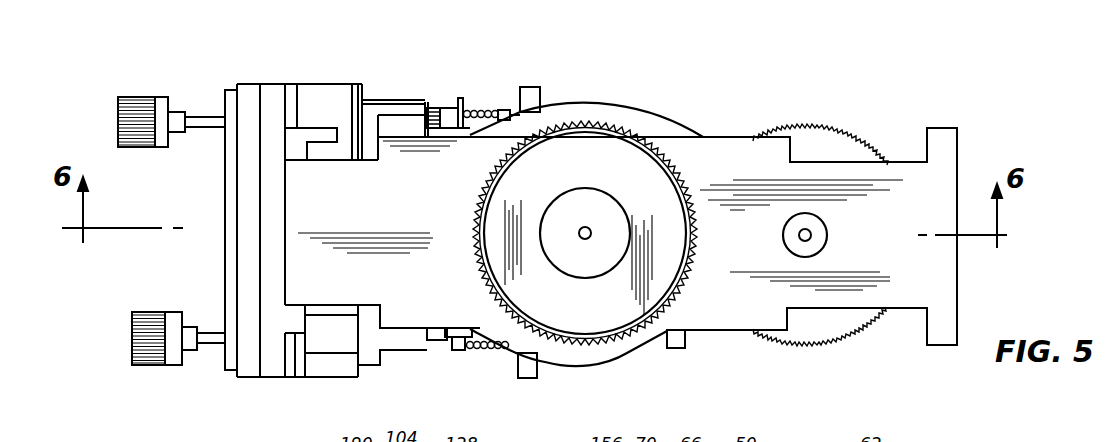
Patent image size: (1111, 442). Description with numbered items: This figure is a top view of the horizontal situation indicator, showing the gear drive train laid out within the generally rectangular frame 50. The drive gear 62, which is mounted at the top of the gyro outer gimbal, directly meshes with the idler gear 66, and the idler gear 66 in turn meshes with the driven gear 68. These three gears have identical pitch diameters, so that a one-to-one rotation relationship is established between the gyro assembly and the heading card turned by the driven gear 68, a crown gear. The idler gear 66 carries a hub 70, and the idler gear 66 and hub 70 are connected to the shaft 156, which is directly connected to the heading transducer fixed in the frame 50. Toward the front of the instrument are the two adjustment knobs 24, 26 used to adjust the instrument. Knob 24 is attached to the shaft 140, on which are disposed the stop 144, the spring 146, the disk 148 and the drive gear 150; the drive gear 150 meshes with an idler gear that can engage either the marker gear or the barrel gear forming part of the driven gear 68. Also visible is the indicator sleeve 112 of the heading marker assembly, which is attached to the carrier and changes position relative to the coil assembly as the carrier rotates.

The knob 24 is at (120, 122).
The knob 26 is at (134, 334).
The frame 50 is at (636, 348).
The drive gear 62 is at (835, 130).
The idler gear 66 is at (617, 157).
The driven gear 68 is at (472, 225).
The hub 70 is at (617, 216).
The indicator sleeve 112 is at (486, 352).
The shaft 140 is at (452, 121).
The stop 144 is at (541, 95).
The spring 146 is at (487, 110).
The disk 148 is at (461, 106).
The drive gear 150 is at (428, 110).
The shaft 156 is at (586, 229).